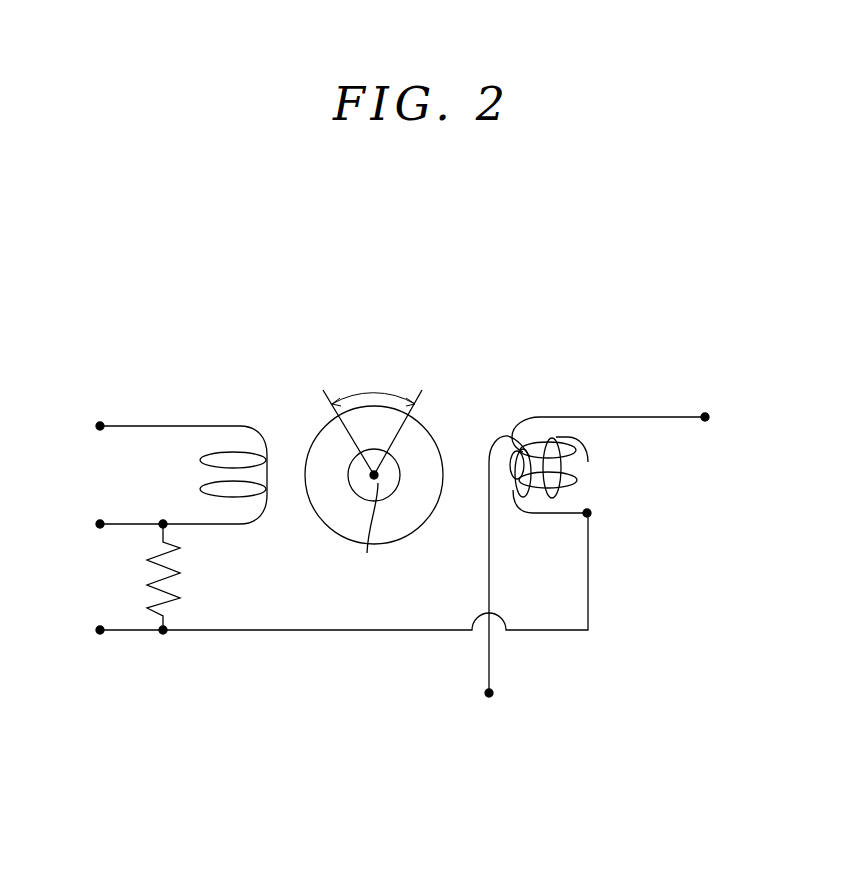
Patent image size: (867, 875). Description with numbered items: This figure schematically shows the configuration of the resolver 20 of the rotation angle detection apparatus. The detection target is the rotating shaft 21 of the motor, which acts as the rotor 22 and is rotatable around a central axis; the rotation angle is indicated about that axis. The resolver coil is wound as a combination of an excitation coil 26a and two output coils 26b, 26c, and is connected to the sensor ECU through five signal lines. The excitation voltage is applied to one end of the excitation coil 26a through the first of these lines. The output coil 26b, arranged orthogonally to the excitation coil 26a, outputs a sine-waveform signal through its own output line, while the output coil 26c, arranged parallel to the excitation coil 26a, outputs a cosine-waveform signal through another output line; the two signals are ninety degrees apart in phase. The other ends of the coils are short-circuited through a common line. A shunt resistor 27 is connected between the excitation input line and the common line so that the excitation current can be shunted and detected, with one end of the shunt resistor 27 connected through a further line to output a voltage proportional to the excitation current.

The resolver 20 is at (700, 342).
The rotating shaft 21 is at (402, 462).
The rotor 22 is at (317, 513).
The excitation coil 26a is at (160, 424).
The output coil 26b is at (489, 550).
The output coil 26c is at (582, 413).
The shunt resistor 27 is at (170, 602).